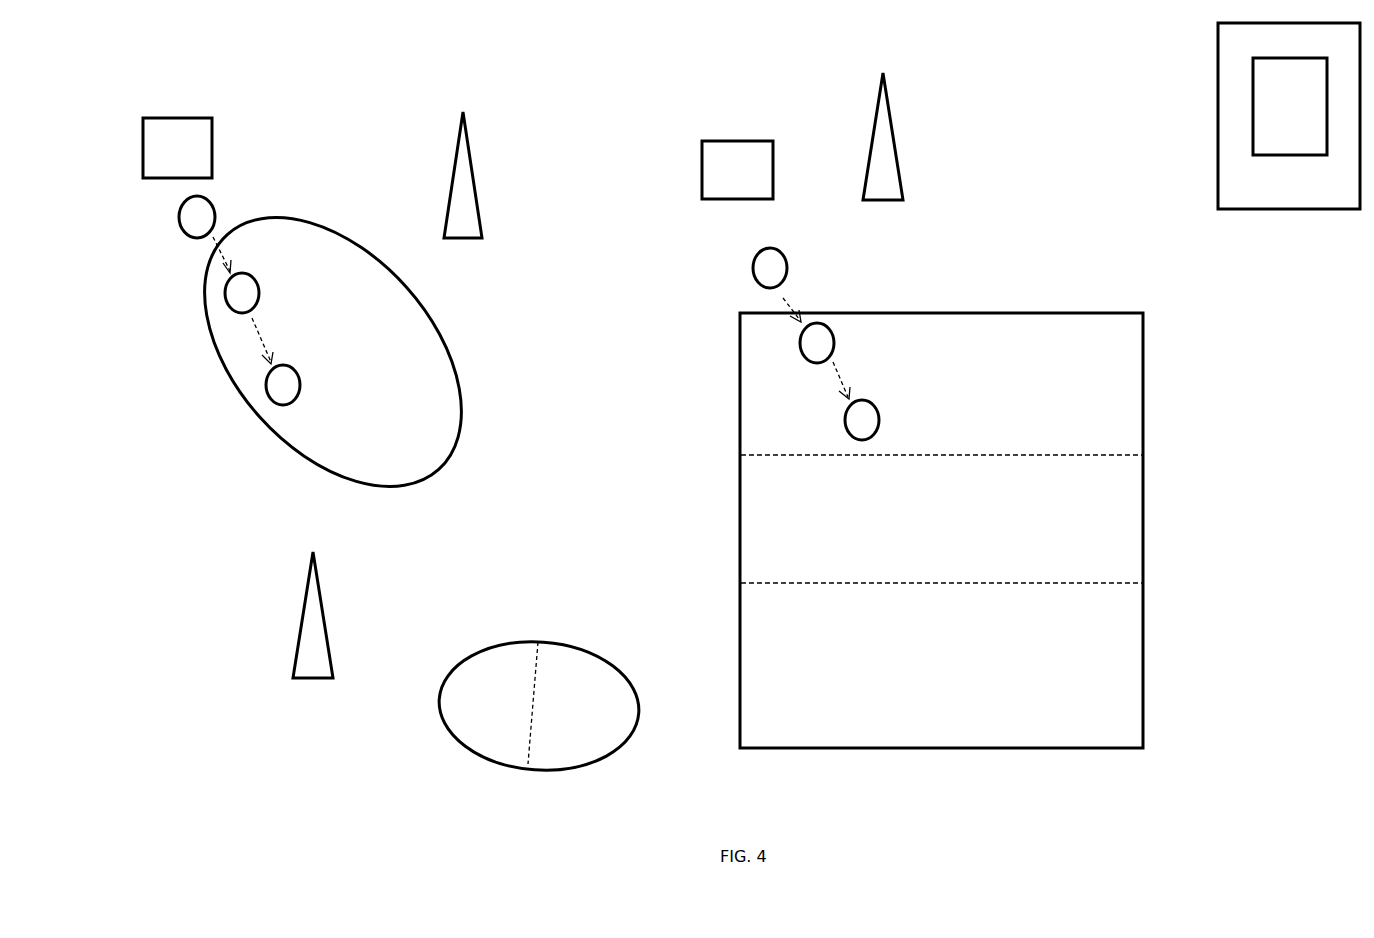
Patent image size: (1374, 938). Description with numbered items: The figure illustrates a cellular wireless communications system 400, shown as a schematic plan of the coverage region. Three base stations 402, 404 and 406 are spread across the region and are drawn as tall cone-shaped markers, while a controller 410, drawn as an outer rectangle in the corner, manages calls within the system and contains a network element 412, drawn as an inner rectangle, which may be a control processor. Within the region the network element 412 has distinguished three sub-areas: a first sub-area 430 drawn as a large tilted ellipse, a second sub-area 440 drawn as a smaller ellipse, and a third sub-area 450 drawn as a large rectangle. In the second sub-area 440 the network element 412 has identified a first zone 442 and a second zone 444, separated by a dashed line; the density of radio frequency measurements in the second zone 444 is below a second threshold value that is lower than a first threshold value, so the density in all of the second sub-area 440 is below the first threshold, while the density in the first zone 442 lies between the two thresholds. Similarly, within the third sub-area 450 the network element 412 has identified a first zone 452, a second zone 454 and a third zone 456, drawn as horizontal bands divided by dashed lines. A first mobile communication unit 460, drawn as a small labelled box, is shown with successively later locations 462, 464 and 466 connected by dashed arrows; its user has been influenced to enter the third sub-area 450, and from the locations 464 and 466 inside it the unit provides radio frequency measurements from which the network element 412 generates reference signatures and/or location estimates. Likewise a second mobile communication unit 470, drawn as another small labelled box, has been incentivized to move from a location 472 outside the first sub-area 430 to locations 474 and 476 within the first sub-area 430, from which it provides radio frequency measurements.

The cellular wireless communications system 400 is at (296, 50).
The base station 402 is at (470, 142).
The base station 404 is at (302, 605).
The base station 406 is at (890, 122).
The controller 410 is at (1285, 213).
The network element 412 is at (1252, 102).
The first sub-area 430 is at (457, 368).
The second sub-area 440 is at (443, 722).
The first zone 442 is at (512, 673).
The second zone 444 is at (587, 672).
The third sub-area 450 is at (738, 680).
The first zone 452 is at (1112, 430).
The second zone 454 is at (1118, 533).
The third zone 456 is at (1125, 657).
The first mobile communication unit 460 is at (702, 157).
The location 462 is at (755, 260).
The location 464 is at (837, 318).
The location 466 is at (867, 392).
The second mobile communication unit 470 is at (170, 118).
The location 472 is at (208, 195).
The location 474 is at (224, 293).
The location 476 is at (266, 388).